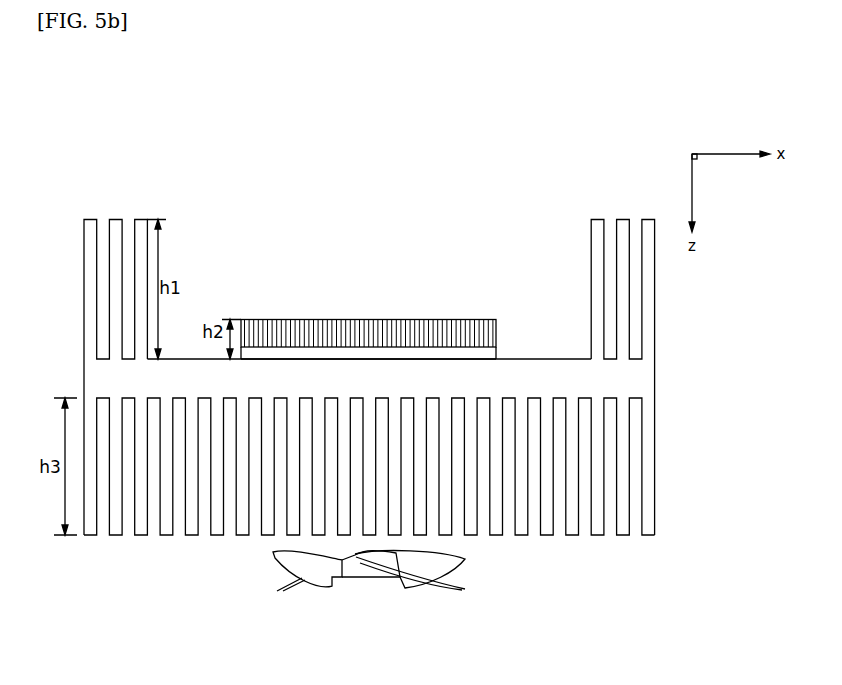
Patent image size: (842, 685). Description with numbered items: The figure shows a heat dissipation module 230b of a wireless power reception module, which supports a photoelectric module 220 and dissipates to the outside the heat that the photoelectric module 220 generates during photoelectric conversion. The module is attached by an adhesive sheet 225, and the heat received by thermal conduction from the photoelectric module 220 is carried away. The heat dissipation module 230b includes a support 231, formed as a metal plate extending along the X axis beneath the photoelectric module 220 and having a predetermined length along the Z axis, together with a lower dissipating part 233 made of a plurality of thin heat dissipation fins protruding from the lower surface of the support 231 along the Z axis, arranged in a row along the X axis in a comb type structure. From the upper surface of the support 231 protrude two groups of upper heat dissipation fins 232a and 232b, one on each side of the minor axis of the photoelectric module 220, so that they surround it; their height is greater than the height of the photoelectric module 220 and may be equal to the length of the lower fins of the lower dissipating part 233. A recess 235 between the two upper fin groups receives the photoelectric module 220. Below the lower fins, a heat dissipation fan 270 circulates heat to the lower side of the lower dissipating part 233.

The heat dissipation module 230b is at (410, 354).
The upper heat dissipation fin 232a is at (147, 213).
The upper heat dissipation fin 232b is at (592, 213).
The recess / mounting groove 235 is at (196, 310).
The support 231 is at (631, 377).
The lower dissipating part 233 is at (643, 493).
The photoelectric module 220 is at (453, 318).
The adhesive sheet 225 is at (482, 352).
The heat dissipation fan 270 is at (445, 567).